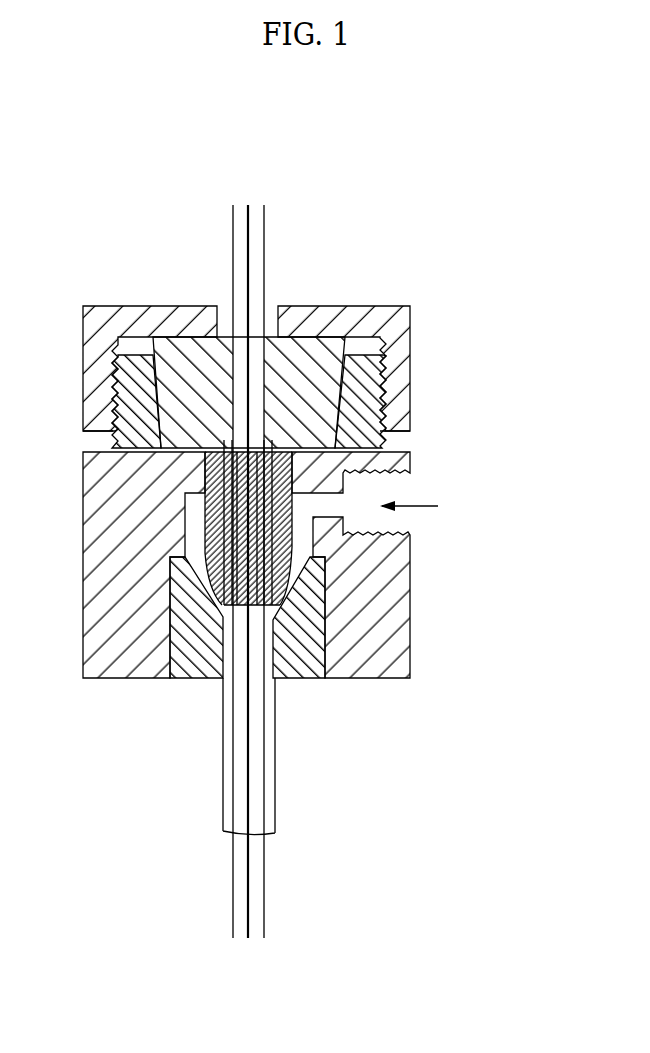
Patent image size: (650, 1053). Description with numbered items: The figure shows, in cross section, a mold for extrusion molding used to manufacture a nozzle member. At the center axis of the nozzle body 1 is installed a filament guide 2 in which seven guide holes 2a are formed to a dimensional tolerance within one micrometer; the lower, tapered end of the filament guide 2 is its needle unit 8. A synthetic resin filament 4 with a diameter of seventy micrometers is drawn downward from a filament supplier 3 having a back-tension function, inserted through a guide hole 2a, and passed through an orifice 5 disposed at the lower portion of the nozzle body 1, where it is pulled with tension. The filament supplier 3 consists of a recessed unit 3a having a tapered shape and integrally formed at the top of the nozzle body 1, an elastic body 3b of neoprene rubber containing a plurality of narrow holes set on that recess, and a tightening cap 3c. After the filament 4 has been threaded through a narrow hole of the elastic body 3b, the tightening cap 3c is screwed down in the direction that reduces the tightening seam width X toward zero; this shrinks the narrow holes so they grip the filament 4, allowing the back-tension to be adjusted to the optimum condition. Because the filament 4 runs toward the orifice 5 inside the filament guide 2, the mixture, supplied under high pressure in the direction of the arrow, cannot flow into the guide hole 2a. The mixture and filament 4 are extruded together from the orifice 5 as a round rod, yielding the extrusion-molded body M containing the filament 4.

The nozzle body 1 is at (383, 608).
The filament guide 2 is at (357, 457).
The guide hole 2a is at (268, 473).
The filament supplier 3 is at (299, 362).
The recessed unit 3a is at (352, 365).
The elastic body 3b is at (311, 348).
The tightening cap 3c is at (413, 357).
The filament 4 is at (233, 877).
The orifice 5 is at (295, 680).
The needle unit of filament guide 8 is at (285, 580).
The extrusion-molded body M is at (276, 797).
The tightening seam width X is at (177, 442).